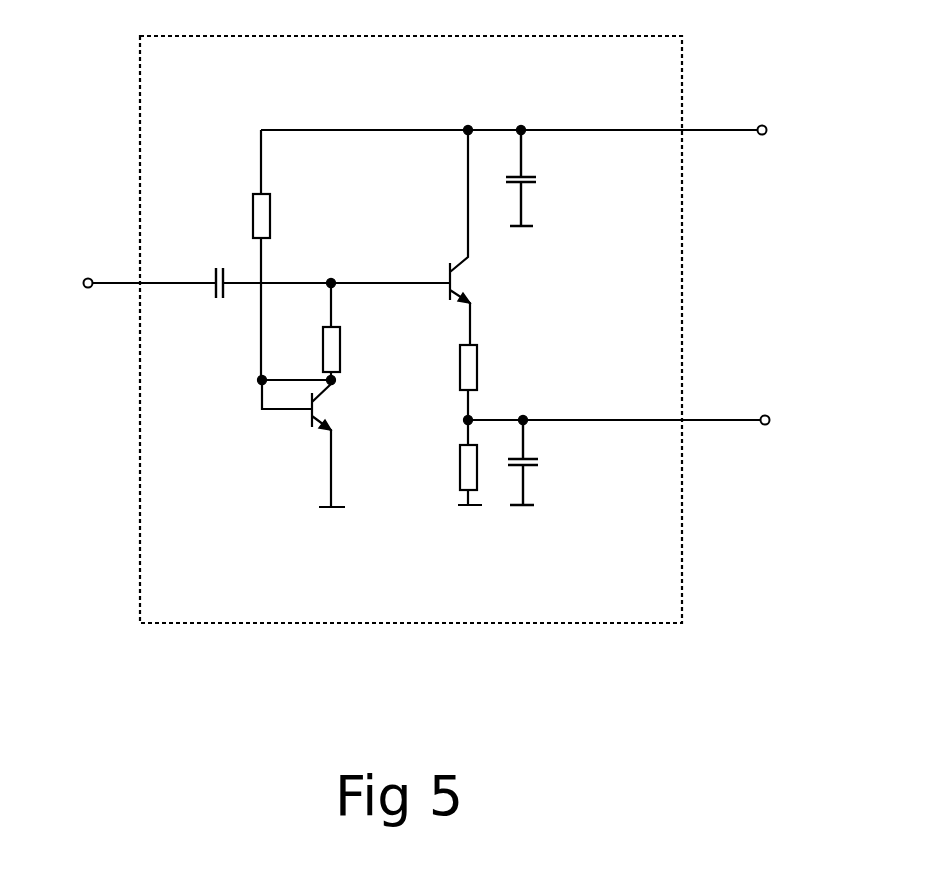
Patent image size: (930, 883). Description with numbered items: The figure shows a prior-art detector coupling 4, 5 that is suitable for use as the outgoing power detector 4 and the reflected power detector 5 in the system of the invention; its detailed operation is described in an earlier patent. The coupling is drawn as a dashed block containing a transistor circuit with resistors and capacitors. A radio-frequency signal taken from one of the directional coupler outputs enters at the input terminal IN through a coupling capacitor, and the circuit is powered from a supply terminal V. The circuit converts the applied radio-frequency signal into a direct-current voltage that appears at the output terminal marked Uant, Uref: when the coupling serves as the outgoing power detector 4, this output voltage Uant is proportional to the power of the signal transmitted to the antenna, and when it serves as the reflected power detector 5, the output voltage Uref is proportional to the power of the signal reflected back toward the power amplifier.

The outgoing power detector 4 is at (364, 329).
The reflected power detector 5 is at (139, 74).
The input terminal IN is at (123, 283).
The supply voltage terminal V is at (541, 129).
The DC voltage proportional to outgoing power Uant is at (650, 395).
The DC voltage proportional to reflected power Uref is at (650, 395).